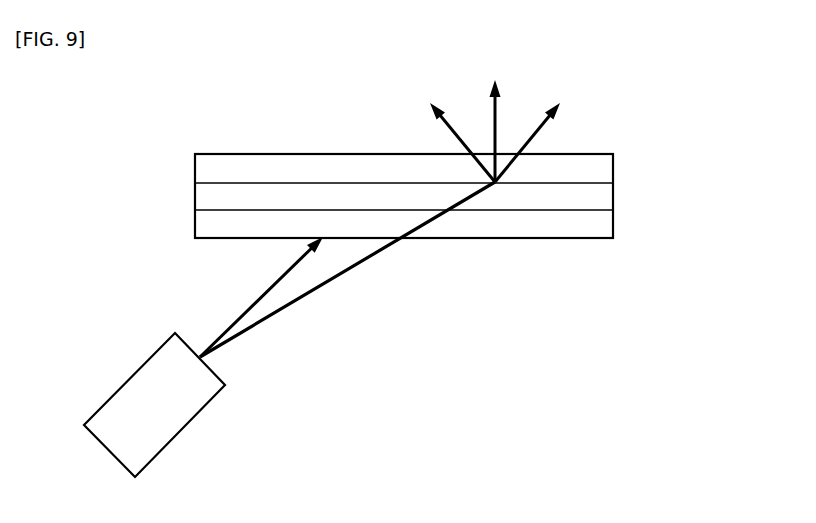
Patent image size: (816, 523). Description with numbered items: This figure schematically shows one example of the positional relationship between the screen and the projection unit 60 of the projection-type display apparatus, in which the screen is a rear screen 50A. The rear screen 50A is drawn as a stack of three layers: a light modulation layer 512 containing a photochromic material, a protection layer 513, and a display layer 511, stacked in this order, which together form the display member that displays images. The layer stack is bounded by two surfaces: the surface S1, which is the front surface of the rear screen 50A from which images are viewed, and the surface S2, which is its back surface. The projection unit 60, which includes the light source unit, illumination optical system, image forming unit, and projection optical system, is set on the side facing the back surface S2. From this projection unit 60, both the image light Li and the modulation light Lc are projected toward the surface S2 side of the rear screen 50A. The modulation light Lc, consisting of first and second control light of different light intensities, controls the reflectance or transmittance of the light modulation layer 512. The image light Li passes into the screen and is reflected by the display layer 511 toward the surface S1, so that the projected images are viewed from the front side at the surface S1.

The rear screen 50A is at (468, 198).
The display layer 511 is at (603, 168).
The protection layer 513 is at (603, 196).
The light modulation layer 512 is at (603, 223).
The surface S1 is at (590, 143).
The surface S2 is at (581, 250).
The projection unit 60 is at (183, 428).
The image light Li is at (313, 292).
The modulation light Lc is at (259, 298).